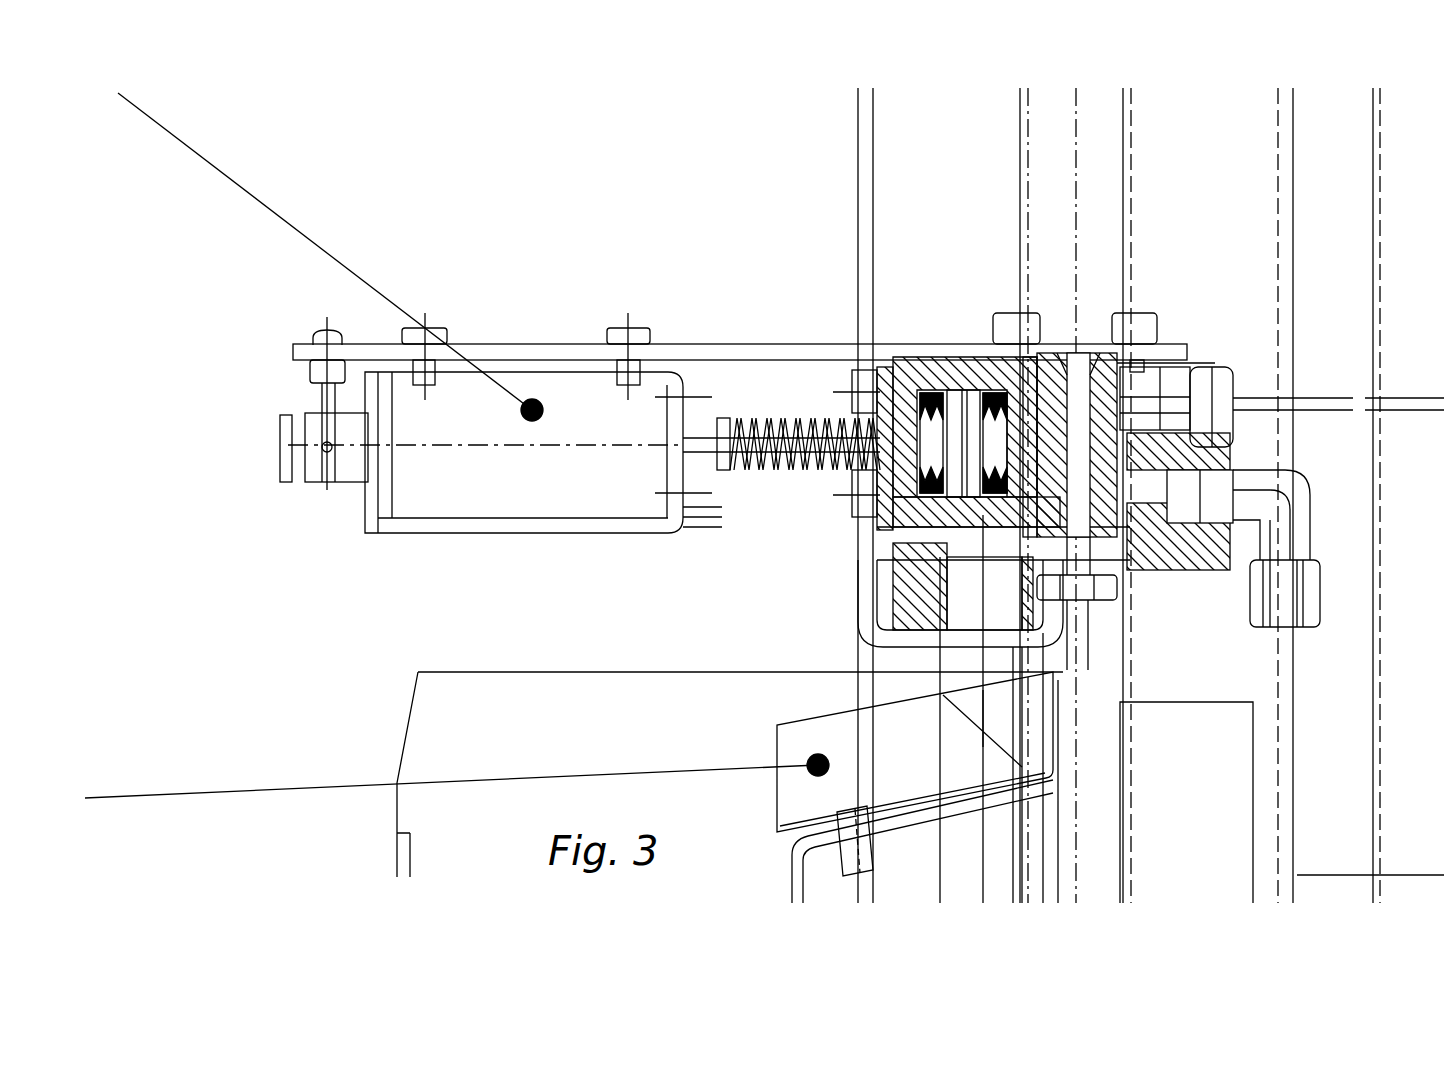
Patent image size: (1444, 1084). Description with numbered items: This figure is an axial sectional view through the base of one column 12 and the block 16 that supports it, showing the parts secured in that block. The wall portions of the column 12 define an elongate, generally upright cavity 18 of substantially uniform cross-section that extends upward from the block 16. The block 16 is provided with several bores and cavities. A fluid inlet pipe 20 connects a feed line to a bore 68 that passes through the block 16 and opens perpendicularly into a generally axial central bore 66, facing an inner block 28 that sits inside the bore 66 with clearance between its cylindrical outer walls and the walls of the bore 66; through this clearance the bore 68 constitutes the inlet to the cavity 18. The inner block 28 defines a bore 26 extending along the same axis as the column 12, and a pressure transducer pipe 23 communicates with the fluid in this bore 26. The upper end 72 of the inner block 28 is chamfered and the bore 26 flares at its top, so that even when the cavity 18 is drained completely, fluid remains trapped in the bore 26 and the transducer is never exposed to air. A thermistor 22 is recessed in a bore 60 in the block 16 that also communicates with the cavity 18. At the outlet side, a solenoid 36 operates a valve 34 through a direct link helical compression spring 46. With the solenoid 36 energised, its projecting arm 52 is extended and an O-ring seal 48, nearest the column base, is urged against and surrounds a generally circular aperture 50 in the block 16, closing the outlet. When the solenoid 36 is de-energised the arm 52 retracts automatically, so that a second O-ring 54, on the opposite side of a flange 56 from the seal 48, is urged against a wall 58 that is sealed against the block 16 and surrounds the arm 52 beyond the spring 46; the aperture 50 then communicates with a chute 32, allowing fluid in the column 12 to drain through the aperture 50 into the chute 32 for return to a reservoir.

The column 12 is at (1133, 157).
The block 16 is at (907, 583).
The cavity 18 is at (1103, 120).
The fluid inlet pipe 20 is at (1305, 505).
The thermistor 22 is at (1127, 407).
The pressure transducer pipe 23 is at (1100, 620).
The bore 26 is at (1105, 505).
The inner block 28 is at (1175, 472).
The chute 32 is at (958, 778).
The solenoid valve 34 is at (990, 390).
The solenoid 36 is at (567, 395).
The helical compression spring 46 is at (812, 410).
The O-ring seal 48 is at (1000, 395).
The aperture 50 is at (1030, 440).
The projecting arm 52 is at (710, 427).
The second O-ring 54 is at (930, 393).
The flange 56 is at (952, 465).
The wall 58 is at (863, 410).
The bore 60 is at (1127, 383).
The axial central bore 66 is at (1140, 385).
The bore 68 is at (1167, 510).
The upper end 72 is at (1100, 400).